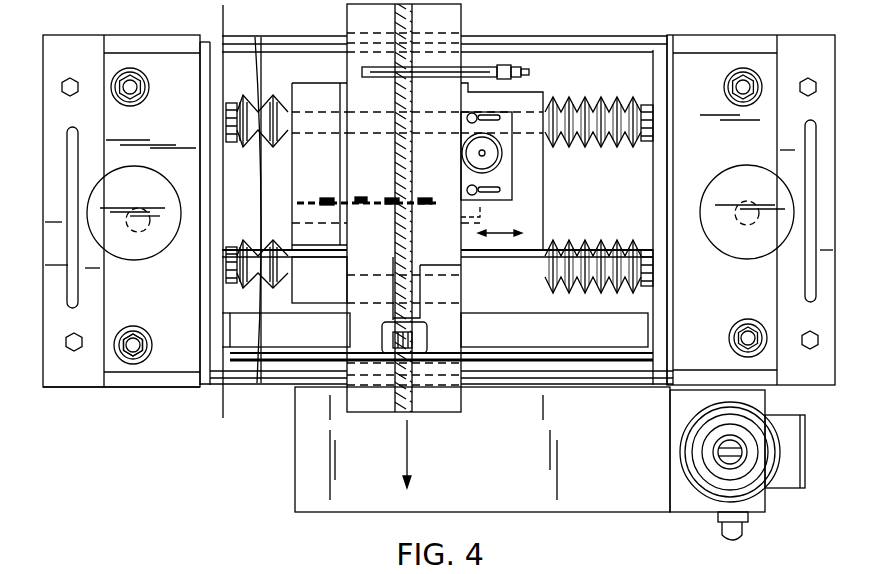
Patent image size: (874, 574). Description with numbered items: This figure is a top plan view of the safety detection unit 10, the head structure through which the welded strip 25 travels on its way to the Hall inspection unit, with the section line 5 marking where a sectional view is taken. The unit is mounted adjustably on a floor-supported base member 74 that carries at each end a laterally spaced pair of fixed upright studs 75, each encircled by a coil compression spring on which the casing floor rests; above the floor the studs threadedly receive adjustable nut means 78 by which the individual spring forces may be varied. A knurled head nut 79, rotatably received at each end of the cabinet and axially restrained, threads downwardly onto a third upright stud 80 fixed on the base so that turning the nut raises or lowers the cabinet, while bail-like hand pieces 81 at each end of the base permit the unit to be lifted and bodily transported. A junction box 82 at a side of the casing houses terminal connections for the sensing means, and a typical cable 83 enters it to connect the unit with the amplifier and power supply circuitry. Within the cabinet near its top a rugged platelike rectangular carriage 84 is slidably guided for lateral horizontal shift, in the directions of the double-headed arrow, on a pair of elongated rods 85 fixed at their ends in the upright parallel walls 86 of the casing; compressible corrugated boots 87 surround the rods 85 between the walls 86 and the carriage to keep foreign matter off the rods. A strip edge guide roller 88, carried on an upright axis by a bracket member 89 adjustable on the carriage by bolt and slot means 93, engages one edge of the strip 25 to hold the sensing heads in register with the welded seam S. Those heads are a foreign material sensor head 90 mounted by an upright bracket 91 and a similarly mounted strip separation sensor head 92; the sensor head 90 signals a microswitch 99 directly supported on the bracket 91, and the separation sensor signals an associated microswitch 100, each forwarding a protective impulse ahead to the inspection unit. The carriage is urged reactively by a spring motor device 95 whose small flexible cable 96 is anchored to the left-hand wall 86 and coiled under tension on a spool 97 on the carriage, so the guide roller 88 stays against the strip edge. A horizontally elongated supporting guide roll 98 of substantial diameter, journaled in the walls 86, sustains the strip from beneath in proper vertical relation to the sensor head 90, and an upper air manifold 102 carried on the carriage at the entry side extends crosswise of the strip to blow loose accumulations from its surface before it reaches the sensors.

The section line 5 is at (222, 15).
The safety detection unit 10 is at (86, 410).
The welded strip 25 is at (384, 402).
The base member 74 is at (50, 380).
The upright studs 75 is at (131, 70).
The adjustable nut means 78 is at (142, 337).
The knurled head nut 79 is at (148, 260).
The third upright stud 80 is at (140, 200).
The baillike hand pieces 81 is at (68, 200).
The junction box 82 is at (625, 505).
The cable 83 is at (748, 530).
The carriage 84 is at (532, 214).
The elongated rods 85 is at (542, 108).
The upright parallel walls 86 is at (668, 180).
The compressible corrugated boots 87 is at (238, 112).
The strip edge guide roller 88 is at (503, 168).
The bracket member 89 is at (503, 187).
The foreign material sensor head 90 is at (428, 340).
The upright bracket 91 is at (528, 250).
The strip separation sensor head 92 is at (288, 284).
The bolt and slot means 93 is at (327, 197).
The spring motor device 95 is at (389, 197).
The flexible cable 96 is at (258, 200).
The spool 97 is at (425, 203).
The supporting guide roll 98 is at (604, 342).
The microswitch 99 is at (402, 297).
The microswitch 100 is at (313, 220).
The upper air manifold 102 is at (440, 70).
The welded seam S is at (410, 412).